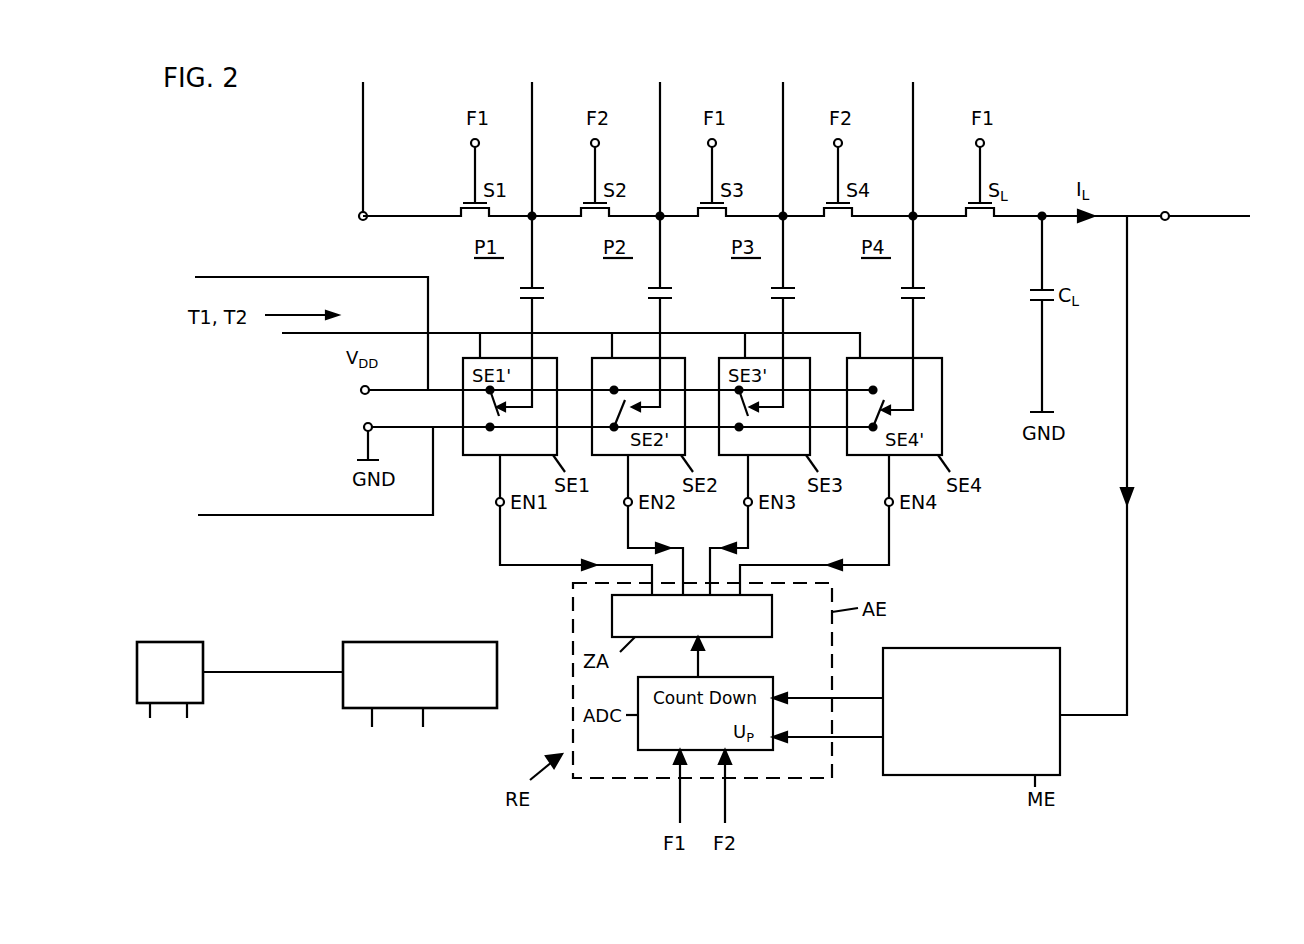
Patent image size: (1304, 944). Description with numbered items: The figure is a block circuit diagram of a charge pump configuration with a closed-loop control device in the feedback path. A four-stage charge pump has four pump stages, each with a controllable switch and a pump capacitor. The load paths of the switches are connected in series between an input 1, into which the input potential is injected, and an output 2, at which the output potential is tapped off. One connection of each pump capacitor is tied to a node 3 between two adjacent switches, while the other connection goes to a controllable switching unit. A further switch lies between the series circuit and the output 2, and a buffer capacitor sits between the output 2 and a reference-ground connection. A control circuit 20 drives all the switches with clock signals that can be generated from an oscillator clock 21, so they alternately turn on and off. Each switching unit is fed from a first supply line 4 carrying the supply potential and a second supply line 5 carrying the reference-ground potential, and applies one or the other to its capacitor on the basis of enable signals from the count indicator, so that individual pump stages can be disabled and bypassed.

The input 1 is at (361, 151).
The output 2 is at (1213, 208).
The node 3 is at (729, 229).
The first supply line 4 is at (299, 326).
The second supply line 5 is at (303, 479).
The control circuit 20 is at (497, 673).
The oscillator clock 21 is at (137, 672).